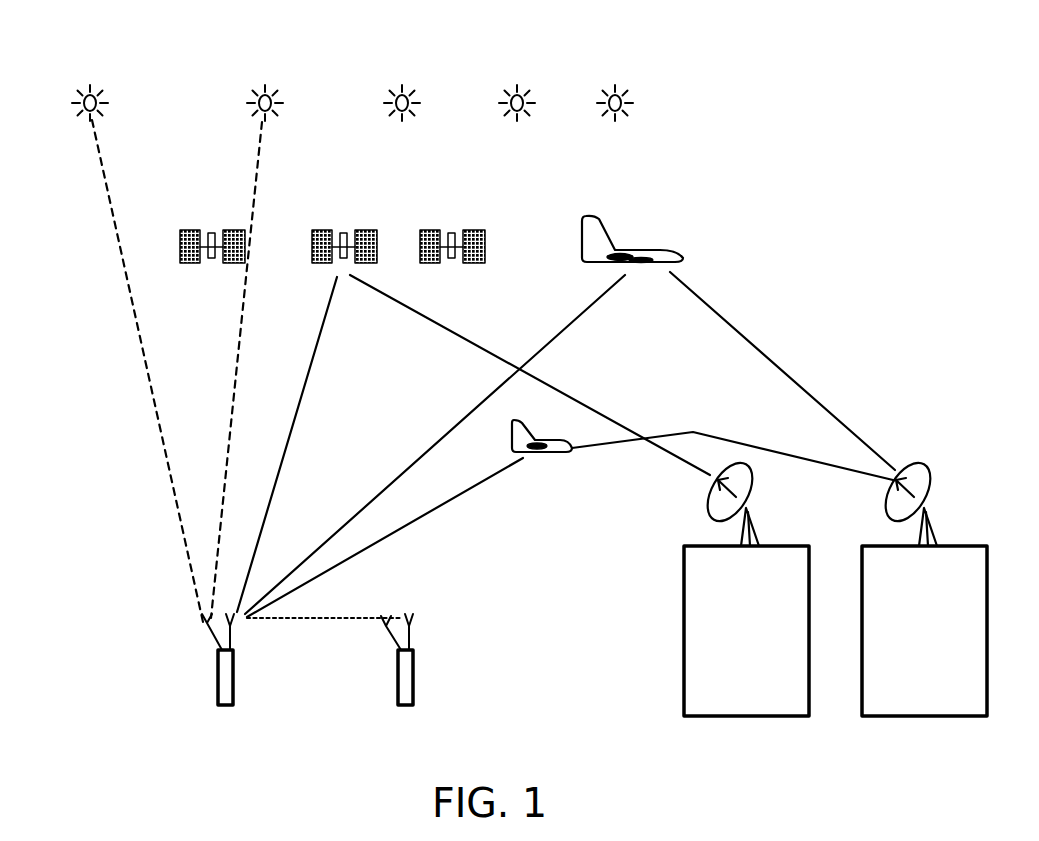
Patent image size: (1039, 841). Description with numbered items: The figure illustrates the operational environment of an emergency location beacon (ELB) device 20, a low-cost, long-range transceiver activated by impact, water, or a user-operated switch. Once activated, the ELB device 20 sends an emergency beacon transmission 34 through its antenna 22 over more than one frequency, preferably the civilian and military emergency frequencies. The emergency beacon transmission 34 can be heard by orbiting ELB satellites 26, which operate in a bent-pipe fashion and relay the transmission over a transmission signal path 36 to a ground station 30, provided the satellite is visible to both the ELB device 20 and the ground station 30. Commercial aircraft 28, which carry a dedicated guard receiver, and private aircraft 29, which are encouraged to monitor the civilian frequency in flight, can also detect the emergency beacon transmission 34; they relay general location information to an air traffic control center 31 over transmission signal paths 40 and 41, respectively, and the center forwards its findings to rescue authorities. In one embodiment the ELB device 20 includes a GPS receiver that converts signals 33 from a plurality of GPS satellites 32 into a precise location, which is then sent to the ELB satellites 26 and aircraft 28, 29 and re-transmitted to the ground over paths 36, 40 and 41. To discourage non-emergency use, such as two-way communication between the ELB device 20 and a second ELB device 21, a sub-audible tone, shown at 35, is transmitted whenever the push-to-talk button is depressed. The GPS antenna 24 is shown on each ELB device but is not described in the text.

The emergency location beacon device 20 is at (229, 688).
The second ELB device 21 is at (413, 680).
The antenna 22 is at (232, 614).
The GPS receiving antenna 24 is at (203, 628).
The ELB satellites 26 is at (192, 265).
The commercial aircraft 28 is at (640, 250).
The private aircraft 29 is at (547, 445).
The ground station 30 is at (809, 604).
The air traffic control center 31 is at (987, 686).
The GPS satellites 32 is at (255, 107).
The GPS signals 33 is at (230, 446).
The emergency beacon transmission 34 is at (281, 462).
The sub-audible tone 35 is at (322, 617).
The transmission signal path 36 is at (608, 415).
The transmission signal path 40 is at (785, 376).
The transmission signal path 41 is at (707, 432).